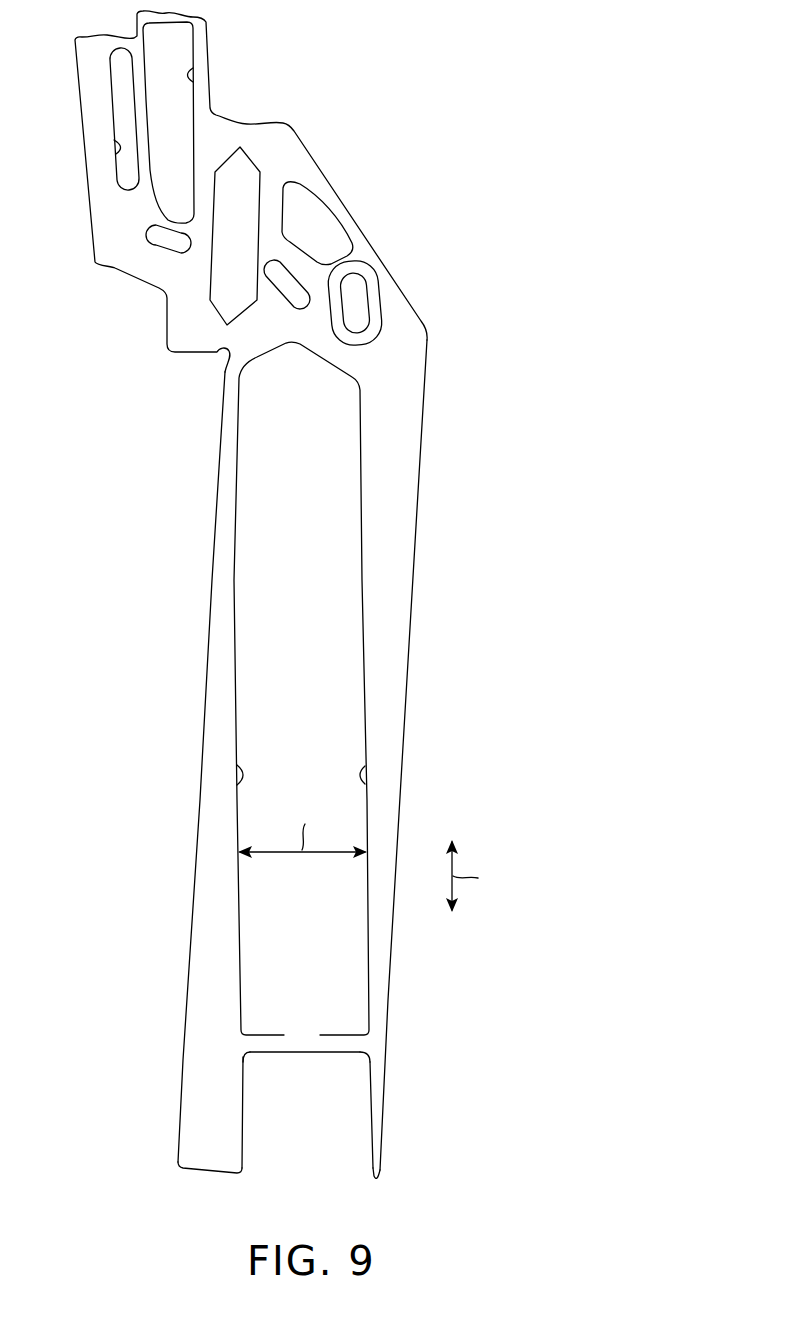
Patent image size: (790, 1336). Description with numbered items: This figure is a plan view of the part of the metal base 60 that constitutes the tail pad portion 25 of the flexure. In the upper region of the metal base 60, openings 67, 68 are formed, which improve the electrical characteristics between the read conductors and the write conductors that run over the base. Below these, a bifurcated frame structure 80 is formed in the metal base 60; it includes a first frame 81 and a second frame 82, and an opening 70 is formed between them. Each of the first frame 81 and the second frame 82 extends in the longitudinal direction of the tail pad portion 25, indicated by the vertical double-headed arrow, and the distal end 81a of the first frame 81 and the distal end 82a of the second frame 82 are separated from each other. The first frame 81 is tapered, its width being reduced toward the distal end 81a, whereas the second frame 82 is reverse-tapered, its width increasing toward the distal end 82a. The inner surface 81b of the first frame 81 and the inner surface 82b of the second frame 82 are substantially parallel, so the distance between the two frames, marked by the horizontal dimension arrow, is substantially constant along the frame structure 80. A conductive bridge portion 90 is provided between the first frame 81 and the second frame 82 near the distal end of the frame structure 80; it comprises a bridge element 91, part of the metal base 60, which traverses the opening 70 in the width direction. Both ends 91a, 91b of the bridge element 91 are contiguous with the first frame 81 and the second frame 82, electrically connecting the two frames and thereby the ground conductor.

The tail pad portion 25 is at (159, 727).
The metal base 60 is at (413, 369).
The opening 67 is at (118, 149).
The opening 68 is at (193, 78).
The opening 70 is at (270, 588).
The frame structure 80 is at (420, 592).
The first frame 81 is at (410, 677).
The distal end of the first frame 81a is at (375, 1183).
The inner surface of the first frame 81b is at (361, 779).
The second frame 82 is at (207, 672).
The distal end of the second frame 82a is at (207, 1174).
The inner surface of the second frame 82b is at (240, 779).
The bridge portion 90 is at (300, 1057).
The bridge element 91 is at (333, 1052).
The end of the bridge element 91a is at (363, 1049).
The end of the bridge element 91b is at (248, 1042).